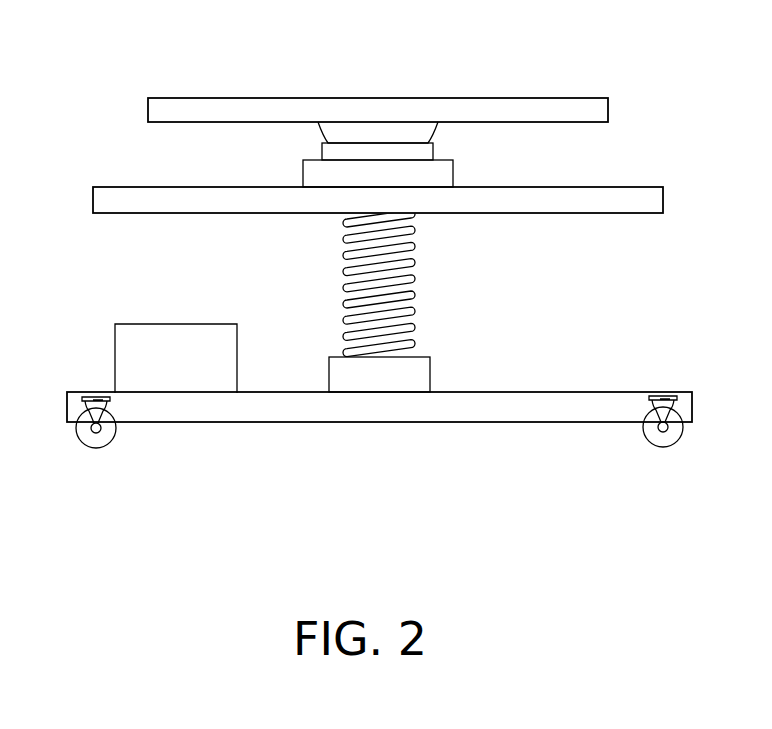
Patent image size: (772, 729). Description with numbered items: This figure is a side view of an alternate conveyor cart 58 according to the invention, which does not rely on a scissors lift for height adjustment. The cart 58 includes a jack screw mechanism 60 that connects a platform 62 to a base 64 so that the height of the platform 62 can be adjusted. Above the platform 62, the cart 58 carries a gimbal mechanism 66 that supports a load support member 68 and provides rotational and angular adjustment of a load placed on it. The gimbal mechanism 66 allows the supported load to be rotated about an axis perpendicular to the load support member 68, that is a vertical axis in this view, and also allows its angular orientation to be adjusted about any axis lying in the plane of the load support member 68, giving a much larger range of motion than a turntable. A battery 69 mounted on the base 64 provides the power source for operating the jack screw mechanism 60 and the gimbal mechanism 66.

The cart 58 is at (79, 128).
The jack screw mechanism 60 is at (413, 278).
The platform 62 is at (647, 200).
The base 64 is at (502, 405).
The gimbal mechanism 66 is at (424, 153).
The load support member 68 is at (442, 107).
The battery 69 is at (147, 343).